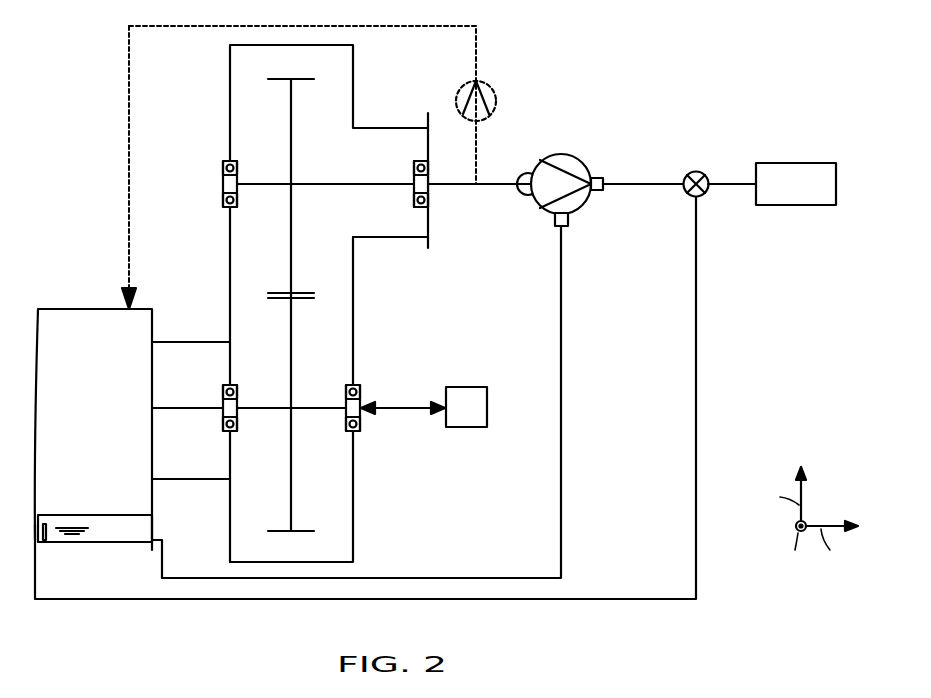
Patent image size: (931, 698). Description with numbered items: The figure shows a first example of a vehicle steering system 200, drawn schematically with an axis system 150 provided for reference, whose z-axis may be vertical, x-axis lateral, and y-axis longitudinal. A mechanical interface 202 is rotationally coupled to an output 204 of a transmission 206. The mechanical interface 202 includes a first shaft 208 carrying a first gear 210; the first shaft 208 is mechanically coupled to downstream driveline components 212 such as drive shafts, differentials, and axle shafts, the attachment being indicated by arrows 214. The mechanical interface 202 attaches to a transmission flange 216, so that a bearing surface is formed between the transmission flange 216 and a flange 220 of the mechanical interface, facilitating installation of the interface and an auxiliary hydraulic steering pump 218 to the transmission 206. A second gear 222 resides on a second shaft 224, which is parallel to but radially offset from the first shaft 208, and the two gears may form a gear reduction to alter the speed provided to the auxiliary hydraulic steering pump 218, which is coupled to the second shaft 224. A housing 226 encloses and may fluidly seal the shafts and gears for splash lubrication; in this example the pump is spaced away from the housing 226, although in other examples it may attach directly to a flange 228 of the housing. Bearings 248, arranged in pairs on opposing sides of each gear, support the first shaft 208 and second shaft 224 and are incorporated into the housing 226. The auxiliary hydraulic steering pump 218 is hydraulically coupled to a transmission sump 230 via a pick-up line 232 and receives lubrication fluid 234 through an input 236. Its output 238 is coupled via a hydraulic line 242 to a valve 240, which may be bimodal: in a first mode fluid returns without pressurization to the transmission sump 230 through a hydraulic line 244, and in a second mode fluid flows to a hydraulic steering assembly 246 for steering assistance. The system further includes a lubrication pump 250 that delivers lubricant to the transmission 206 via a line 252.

The axis system 150 is at (832, 502).
The vehicle steering system 200 is at (804, 49).
The mechanical interface 202 is at (174, 84).
The output 204 is at (155, 410).
The transmission 206 is at (70, 309).
The first shaft 208 is at (297, 406).
The first gear 210 is at (289, 341).
The downstream driveline components 212 is at (465, 387).
The arrows 214 is at (407, 405).
The transmission flange 216 is at (152, 330).
The auxiliary hydraulic steering pump 218 is at (559, 154).
The flange 220 is at (152, 486).
The second gear 222 is at (292, 250).
The second shaft 224 is at (308, 184).
The housing 226 is at (230, 85).
The flange 228 is at (430, 245).
The transmission sump 230 is at (153, 520).
The pick-up line 232 is at (562, 333).
The lubrication fluid 234 is at (132, 540).
The input 236 is at (570, 221).
The output 238 is at (601, 177).
The valve 240 is at (696, 171).
The hydraulic line 242 is at (625, 187).
The hydraulic line 244 is at (696, 333).
The hydraulic steering assembly 246 is at (794, 163).
The bearings 248 is at (222, 170).
The lubrication pump 250 is at (491, 87).
The line 252 is at (376, 27).